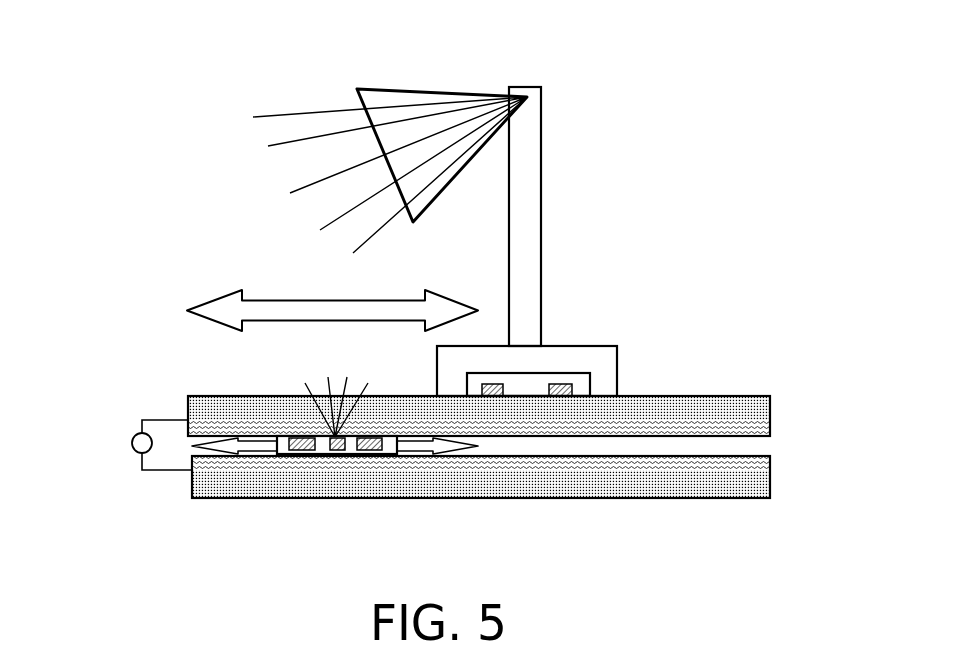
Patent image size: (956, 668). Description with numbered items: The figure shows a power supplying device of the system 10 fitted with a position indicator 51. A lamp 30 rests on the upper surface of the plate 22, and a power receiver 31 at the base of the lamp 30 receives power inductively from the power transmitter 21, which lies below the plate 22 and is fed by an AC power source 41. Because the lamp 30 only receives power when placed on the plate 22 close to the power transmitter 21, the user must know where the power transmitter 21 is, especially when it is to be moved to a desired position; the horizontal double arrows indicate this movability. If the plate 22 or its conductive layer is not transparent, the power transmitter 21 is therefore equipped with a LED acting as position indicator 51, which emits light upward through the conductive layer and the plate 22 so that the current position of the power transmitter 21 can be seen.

The system 10 is at (732, 123).
The power transmitter 21 is at (295, 437).
The plate 22 is at (728, 395).
The lamp 30 is at (420, 92).
The power receiver 31 is at (590, 381).
The AC power source 41 is at (132, 443).
The position indicator 51 is at (335, 454).